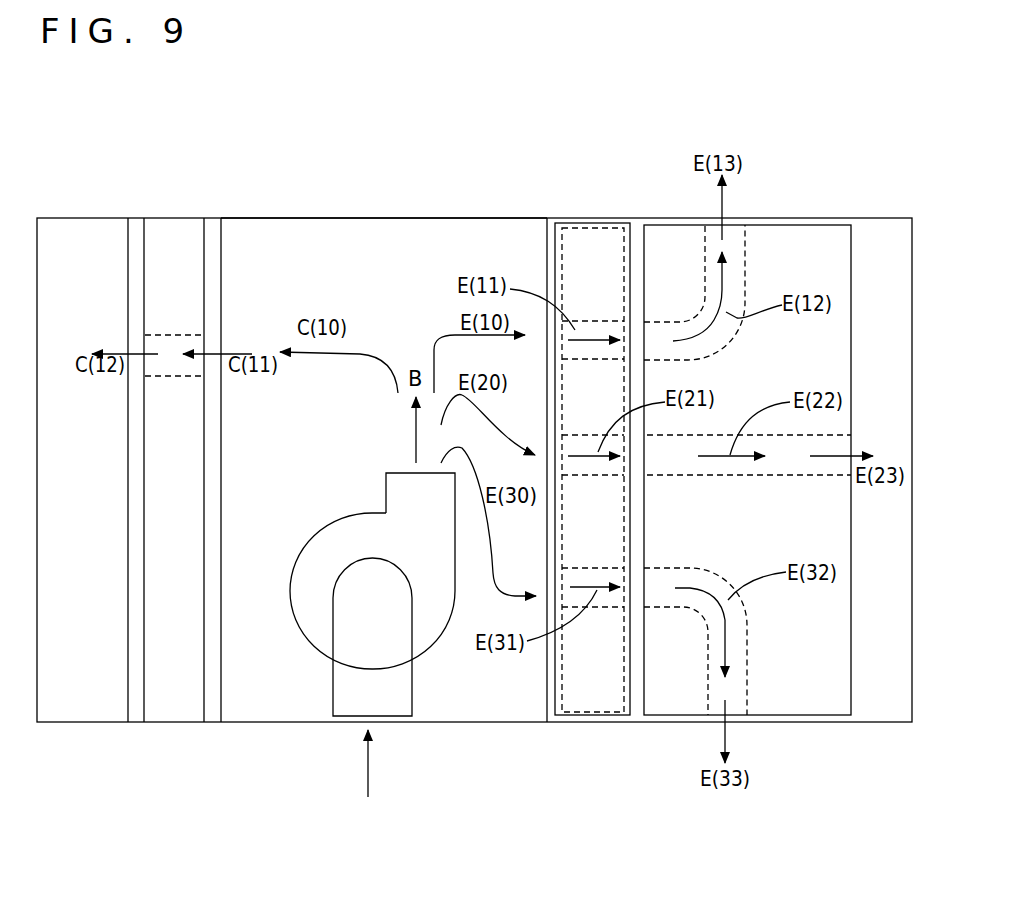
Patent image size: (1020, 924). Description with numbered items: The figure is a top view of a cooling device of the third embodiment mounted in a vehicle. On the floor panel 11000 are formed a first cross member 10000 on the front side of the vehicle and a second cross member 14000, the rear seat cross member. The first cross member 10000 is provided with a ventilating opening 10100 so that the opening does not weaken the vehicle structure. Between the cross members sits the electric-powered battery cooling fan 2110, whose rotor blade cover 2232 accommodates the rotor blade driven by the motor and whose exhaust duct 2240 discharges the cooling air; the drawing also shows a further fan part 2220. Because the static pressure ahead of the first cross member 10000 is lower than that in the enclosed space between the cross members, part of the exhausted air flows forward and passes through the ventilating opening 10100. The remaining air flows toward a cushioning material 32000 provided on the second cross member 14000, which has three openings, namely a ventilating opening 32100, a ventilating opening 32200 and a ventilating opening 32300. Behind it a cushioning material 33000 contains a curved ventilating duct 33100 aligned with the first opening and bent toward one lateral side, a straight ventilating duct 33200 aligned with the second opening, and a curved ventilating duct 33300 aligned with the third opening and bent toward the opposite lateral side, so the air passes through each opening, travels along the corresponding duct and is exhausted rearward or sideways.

The first cross member 10000 is at (170, 232).
The ventilating opening 10100 is at (153, 347).
The floor panel 11000 is at (343, 240).
The second cross member 14000 is at (547, 232).
The battery cooling fan 2110 is at (394, 556).
The exhaust duct 2240 is at (393, 500).
The rotor blade cover 2232 is at (435, 655).
The fan intake 2220 is at (403, 682).
The cushioning material 32000 is at (596, 438).
The ventilating opening 32100 is at (583, 332).
The ventilating opening 32200 is at (590, 450).
The ventilating opening 32300 is at (585, 575).
The cushioning material 33000 is at (758, 438).
The curved ventilating duct 33100 is at (690, 347).
The straight ventilating duct 33200 is at (678, 460).
The curved ventilating duct 33300 is at (692, 584).